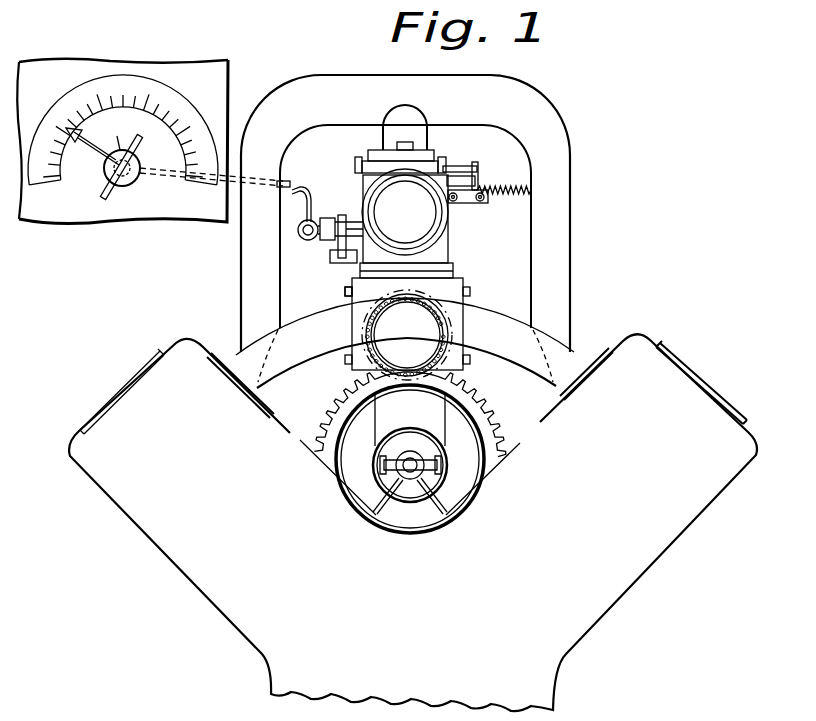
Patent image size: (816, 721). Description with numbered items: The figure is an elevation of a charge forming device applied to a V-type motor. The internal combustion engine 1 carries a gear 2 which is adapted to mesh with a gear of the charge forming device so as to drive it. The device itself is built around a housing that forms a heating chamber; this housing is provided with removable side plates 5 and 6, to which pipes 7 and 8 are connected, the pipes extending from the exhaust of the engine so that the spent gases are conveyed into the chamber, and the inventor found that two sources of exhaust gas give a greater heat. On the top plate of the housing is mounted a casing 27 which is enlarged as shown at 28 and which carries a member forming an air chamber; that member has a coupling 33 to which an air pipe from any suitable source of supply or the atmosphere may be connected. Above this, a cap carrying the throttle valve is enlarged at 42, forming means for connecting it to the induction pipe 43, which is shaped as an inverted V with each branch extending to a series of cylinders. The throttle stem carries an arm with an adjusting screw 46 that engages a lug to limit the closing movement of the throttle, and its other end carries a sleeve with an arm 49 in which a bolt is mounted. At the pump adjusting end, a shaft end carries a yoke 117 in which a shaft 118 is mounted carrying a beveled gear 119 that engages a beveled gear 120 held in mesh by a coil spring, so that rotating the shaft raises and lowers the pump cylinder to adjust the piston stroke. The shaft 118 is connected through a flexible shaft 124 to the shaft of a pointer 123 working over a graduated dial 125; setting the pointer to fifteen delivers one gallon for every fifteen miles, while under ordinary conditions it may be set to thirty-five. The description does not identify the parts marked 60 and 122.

The internal combustion engine 1 is at (413, 393).
The gear 2 is at (409, 452).
The removable side plate 5 is at (346, 360).
The removable side plate 6 is at (470, 362).
The pipe 7 is at (321, 343).
The pipe 8 is at (490, 342).
The casing 27 is at (453, 271).
The enlarged portion of casing 28 is at (448, 252).
The coupling 33 is at (448, 226).
The enlarged portion of cap 42 is at (385, 154).
The induction pipe 43 is at (427, 133).
The adjusting screw 46 is at (460, 167).
The arm 49 is at (466, 168).
The spring 60 is at (510, 176).
The yoke 117 is at (340, 215).
The shaft 118 is at (318, 172).
The beveled gear 119 is at (306, 241).
The beveled gear 120 is at (345, 291).
The handle 122 is at (110, 188).
The pointer 123 is at (102, 137).
The flexible shaft 124 is at (226, 225).
The graduated dial 125 is at (113, 83).